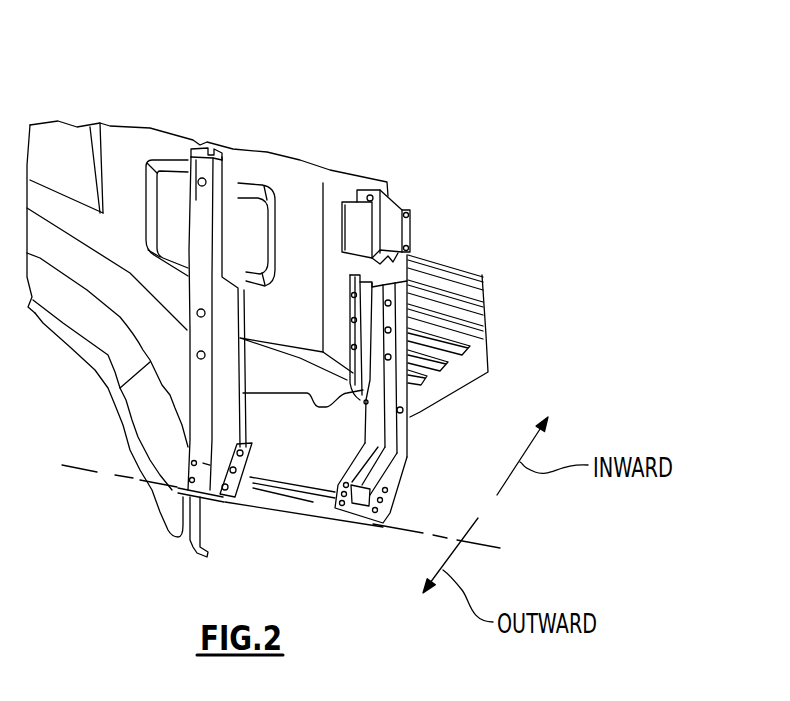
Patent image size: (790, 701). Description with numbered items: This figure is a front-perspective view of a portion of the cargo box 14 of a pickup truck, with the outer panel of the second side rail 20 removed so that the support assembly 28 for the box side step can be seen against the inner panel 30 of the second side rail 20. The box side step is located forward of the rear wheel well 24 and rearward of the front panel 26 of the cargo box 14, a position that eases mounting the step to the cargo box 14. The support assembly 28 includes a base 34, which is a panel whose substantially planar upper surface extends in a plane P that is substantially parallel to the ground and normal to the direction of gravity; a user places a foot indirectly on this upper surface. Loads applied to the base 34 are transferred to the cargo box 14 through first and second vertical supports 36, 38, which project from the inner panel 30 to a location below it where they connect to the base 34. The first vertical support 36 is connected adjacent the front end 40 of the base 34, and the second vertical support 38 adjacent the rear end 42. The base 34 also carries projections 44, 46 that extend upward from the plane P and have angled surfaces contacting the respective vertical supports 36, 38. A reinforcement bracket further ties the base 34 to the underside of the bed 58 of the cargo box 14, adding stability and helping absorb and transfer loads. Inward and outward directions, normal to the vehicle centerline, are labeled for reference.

The cargo box 14 is at (170, 70).
The second side rail 20 is at (228, 130).
The rear wheel well 24 is at (110, 444).
The front panel 26 is at (440, 413).
The support assembly 28 is at (306, 189).
The inner panel 30 is at (130, 160).
The base 34 is at (272, 495).
The first vertical support 36 is at (365, 327).
The second vertical support 38 is at (205, 190).
The front end 40 is at (373, 522).
The rear end 42 is at (160, 495).
The projection 44 is at (343, 487).
The projection 46 is at (256, 465).
The bed 58 is at (450, 293).
The plane P is at (85, 472).